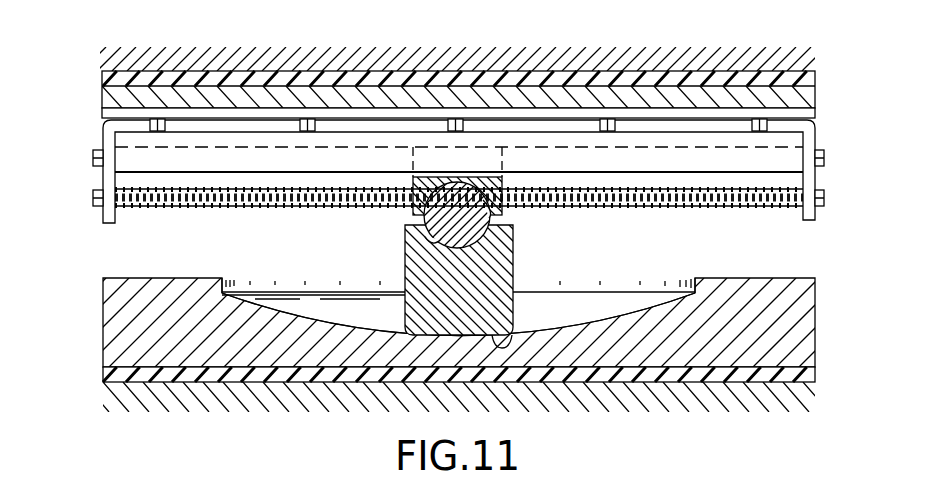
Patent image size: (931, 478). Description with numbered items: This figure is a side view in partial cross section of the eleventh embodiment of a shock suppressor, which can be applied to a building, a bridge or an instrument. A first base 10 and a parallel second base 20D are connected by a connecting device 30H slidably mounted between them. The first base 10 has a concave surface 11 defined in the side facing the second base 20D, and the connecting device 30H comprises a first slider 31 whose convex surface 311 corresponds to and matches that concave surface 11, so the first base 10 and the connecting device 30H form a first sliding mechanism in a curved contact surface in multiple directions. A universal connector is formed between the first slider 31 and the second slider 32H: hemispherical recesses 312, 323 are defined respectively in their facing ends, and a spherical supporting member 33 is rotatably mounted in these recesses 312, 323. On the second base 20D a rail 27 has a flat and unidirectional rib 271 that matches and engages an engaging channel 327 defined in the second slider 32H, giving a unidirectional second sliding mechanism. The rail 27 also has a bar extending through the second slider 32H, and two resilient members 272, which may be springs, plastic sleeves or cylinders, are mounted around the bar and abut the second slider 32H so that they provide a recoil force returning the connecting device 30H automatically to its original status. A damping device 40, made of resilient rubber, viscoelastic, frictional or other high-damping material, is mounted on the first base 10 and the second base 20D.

The first base 10 is at (100, 326).
The concave surface 11 is at (644, 303).
The connecting device 30H is at (518, 283).
The first slider 31 is at (425, 300).
The convex surface 311 is at (512, 338).
The second slider 32H is at (415, 212).
The supporting member 33 is at (482, 233).
The recess 312 is at (433, 240).
The recess 323 is at (494, 209).
The second base 20D is at (100, 97).
The damping device 40 is at (100, 72).
The rail 27 is at (109, 214).
The rib 271 is at (167, 147).
The resilient members 272 is at (276, 198).
The engaging channel 327 is at (428, 151).